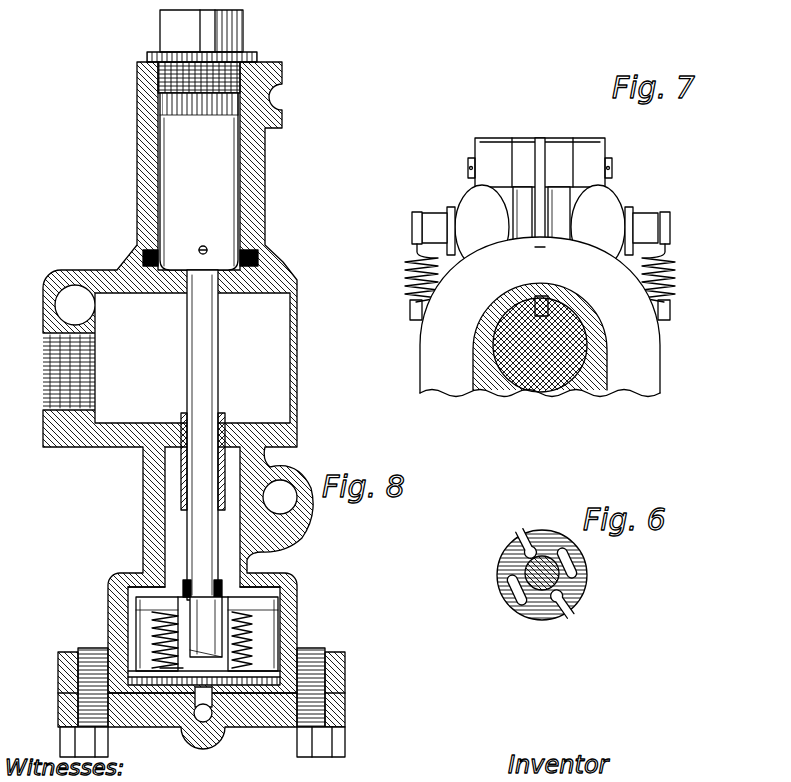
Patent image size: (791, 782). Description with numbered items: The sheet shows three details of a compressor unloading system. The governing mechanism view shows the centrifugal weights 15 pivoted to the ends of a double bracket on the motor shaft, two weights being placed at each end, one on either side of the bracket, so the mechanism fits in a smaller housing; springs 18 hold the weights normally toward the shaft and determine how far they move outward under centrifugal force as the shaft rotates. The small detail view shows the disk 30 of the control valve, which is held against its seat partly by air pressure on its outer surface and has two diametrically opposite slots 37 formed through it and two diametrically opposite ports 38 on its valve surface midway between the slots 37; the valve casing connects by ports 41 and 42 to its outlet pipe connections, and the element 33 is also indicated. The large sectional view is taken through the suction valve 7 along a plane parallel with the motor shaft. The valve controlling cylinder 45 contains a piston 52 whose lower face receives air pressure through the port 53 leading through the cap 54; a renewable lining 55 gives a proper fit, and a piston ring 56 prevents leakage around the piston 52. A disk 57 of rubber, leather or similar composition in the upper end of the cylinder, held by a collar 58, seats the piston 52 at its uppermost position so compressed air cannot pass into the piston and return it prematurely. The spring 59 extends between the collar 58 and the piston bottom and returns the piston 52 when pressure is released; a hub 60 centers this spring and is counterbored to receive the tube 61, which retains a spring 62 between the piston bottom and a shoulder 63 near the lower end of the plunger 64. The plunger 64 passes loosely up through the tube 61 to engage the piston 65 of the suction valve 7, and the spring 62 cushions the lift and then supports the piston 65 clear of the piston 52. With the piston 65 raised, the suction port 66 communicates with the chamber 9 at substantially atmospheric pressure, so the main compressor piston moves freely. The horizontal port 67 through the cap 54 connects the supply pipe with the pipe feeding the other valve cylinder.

In FIG. 8, the suction valve 7 is at (150, 170).
In FIG. 8, the chamber 9 is at (133, 416).
In FIG. 7, the centrifugal weights 15 is at (468, 200).
In FIG. 7, the springs 18 is at (400, 268).
In FIG. 6, the disk 30 is at (543, 537).
In FIG. 8, the member 33 is at (51, 6).
In FIG. 6, the slots 37 is at (527, 548).
In FIG. 6, the ports 38 is at (571, 562).
In FIG. 7, the port 41 is at (534, 6).
In FIG. 7, the port 42 is at (579, 6).
In FIG. 8, the valve controlling cylinder 45 is at (290, 607).
In FIG. 8, the piston 52 is at (275, 622).
In FIG. 8, the port 53 is at (207, 700).
In FIG. 8, the cap 54 is at (272, 712).
In FIG. 8, the lining 55 is at (270, 600).
In FIG. 8, the piston ring 56 is at (255, 642).
In FIG. 8, the disk 57 is at (215, 600).
In FIG. 8, the collar 58 is at (180, 606).
In FIG. 8, the spring 59 is at (170, 636).
In FIG. 8, the hub 60 is at (183, 662).
In FIG. 8, the tube 61 is at (225, 482).
In FIG. 8, the spring 62 is at (225, 590).
In FIG. 8, the shoulder 63 is at (200, 598).
In FIG. 8, the plunger 64 is at (200, 478).
In FIG. 8, the piston 65 is at (218, 200).
In FIG. 8, the suction port 66 is at (265, 250).
In FIG. 8, the port 67 is at (205, 722).